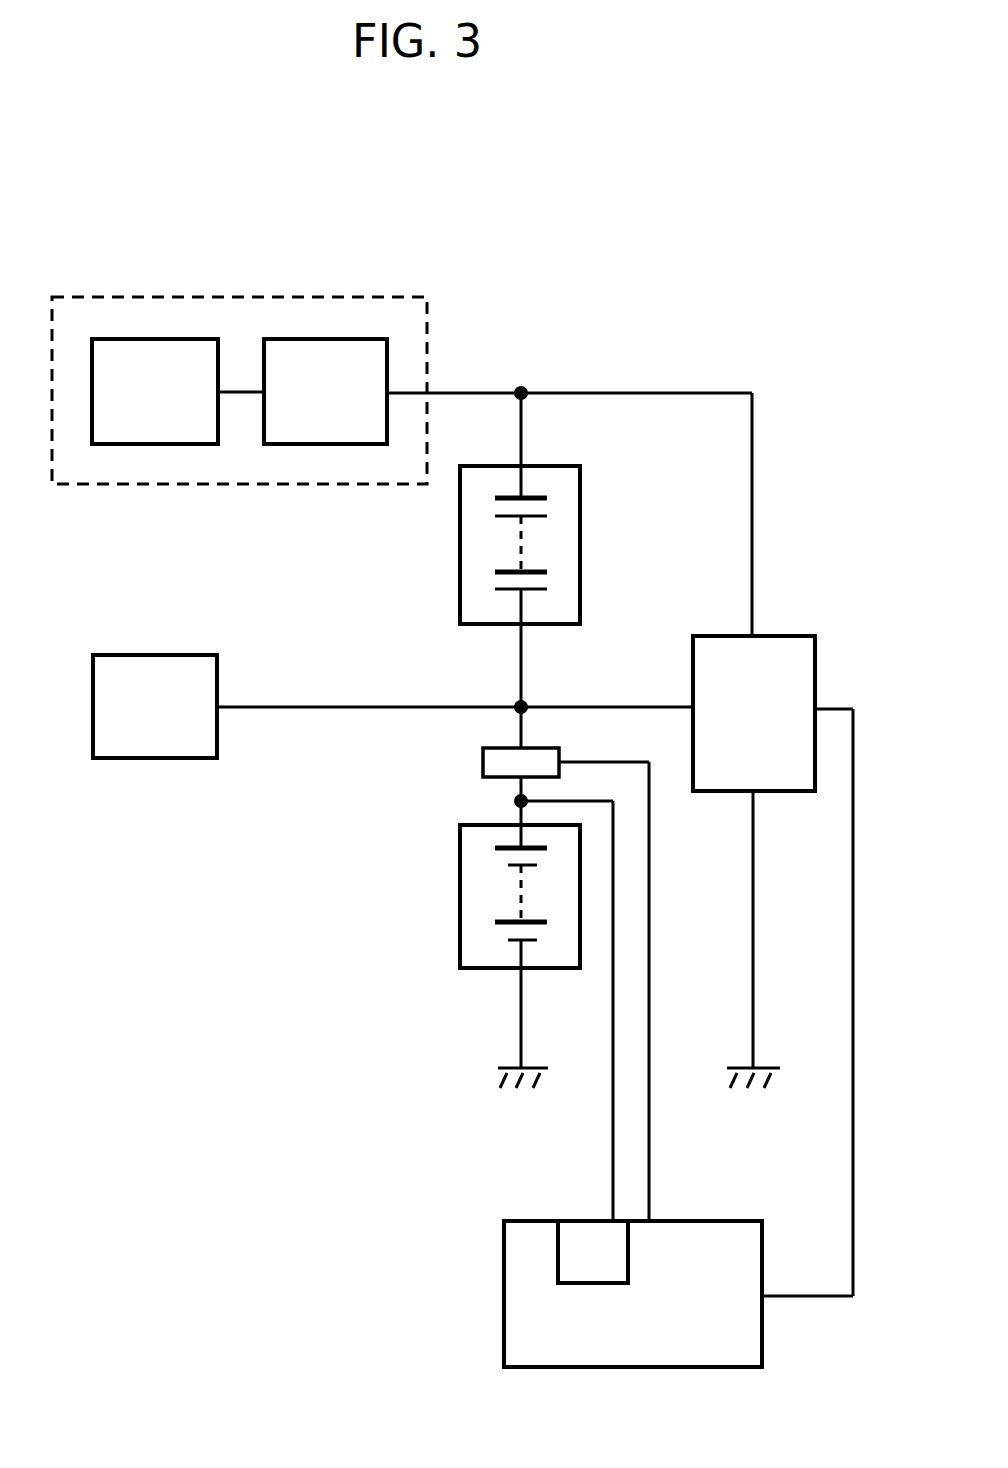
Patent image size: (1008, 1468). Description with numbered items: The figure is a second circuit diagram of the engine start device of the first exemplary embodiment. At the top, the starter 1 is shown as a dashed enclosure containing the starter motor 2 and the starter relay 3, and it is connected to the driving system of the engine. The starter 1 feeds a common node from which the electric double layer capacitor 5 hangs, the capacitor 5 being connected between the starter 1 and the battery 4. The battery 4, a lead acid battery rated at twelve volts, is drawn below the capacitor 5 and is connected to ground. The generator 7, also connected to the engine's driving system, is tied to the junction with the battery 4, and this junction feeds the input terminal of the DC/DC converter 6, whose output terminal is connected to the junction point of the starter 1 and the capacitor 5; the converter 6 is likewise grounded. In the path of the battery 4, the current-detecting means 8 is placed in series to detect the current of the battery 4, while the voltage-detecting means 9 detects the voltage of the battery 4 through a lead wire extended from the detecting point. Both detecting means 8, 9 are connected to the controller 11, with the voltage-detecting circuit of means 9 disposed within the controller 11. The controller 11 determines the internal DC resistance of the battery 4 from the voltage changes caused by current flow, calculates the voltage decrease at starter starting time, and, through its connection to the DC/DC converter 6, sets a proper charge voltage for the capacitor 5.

The starter 1 is at (250, 487).
The starter motor 2 is at (151, 338).
The starter relay 3 is at (325, 338).
The battery 4 is at (458, 890).
The electric double layer capacitor 5 is at (458, 567).
The DC/DC converter 6 is at (711, 633).
The generator 7 is at (159, 759).
The current-detecting means 8 is at (483, 761).
The voltage-detecting means 9 is at (595, 1240).
The controller 11 is at (503, 1283).